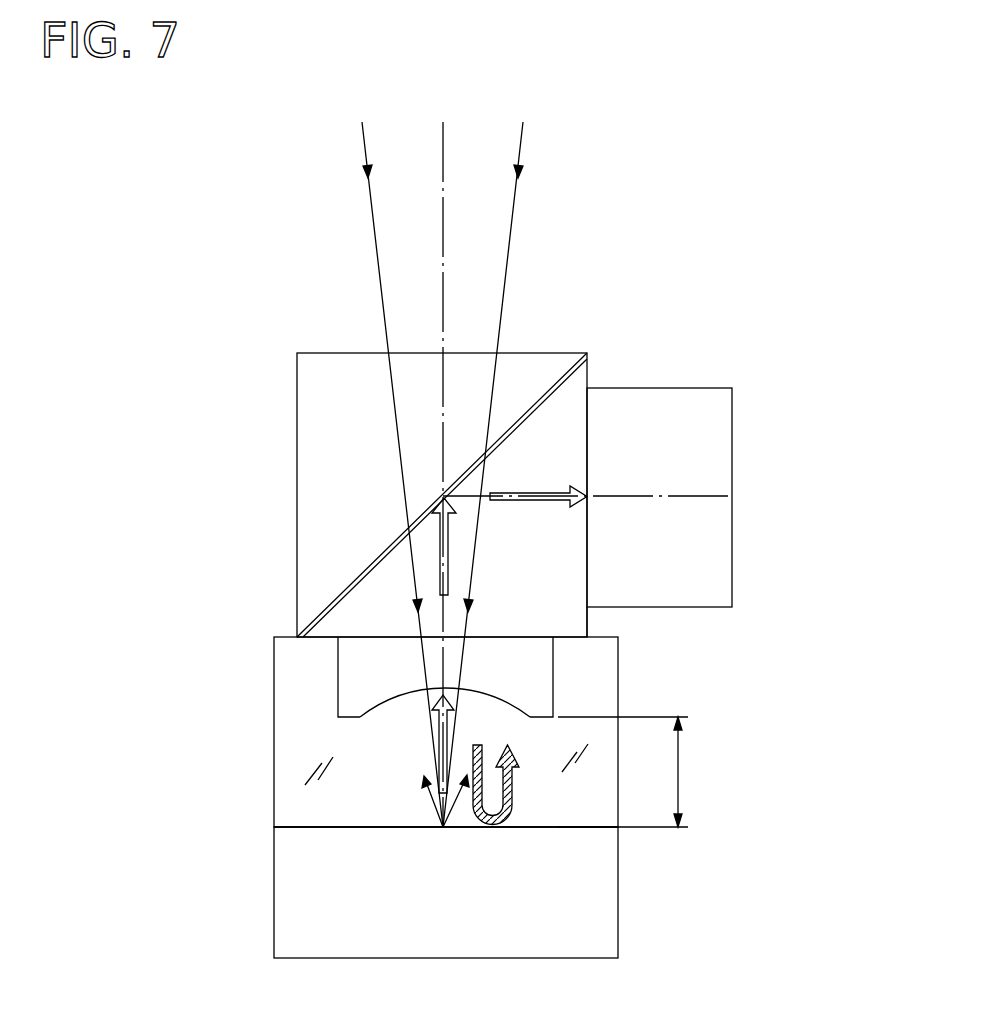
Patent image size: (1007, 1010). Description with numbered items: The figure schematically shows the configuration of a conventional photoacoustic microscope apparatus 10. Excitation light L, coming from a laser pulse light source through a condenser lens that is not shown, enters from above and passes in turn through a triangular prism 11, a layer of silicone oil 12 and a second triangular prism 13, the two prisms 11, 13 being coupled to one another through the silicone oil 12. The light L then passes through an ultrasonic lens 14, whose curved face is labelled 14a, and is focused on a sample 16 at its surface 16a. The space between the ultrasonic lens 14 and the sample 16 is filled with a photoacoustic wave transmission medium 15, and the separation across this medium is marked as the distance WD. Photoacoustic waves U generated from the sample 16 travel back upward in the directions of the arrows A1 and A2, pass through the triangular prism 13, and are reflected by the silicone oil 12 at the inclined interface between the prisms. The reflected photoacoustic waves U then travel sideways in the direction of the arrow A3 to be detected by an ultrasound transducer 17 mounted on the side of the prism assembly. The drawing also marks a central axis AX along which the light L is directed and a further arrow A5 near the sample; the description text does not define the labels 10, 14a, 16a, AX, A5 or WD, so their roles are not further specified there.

The imaging device 10 is at (574, 176).
The triangular prism 11 is at (297, 398).
The silicone oil 12 is at (343, 597).
The triangular prism 13 is at (590, 615).
The ultrasonic lens 14 is at (338, 687).
The lens 14a is at (477, 700).
The photoacoustic wave transmission medium 15 is at (274, 790).
The sample 16 is at (274, 922).
The stage surface 16a is at (307, 827).
The ultrasound transducer 17 is at (732, 472).
The excitation light L is at (378, 255).
The optical axis AX is at (443, 405).
The arrow A1 is at (437, 748).
The arrow A2 is at (436, 567).
The arrow A3 is at (533, 495).
The reflected light path A5 is at (517, 800).
The photoacoustic waves U is at (432, 808).
The working distance WD is at (644, 772).